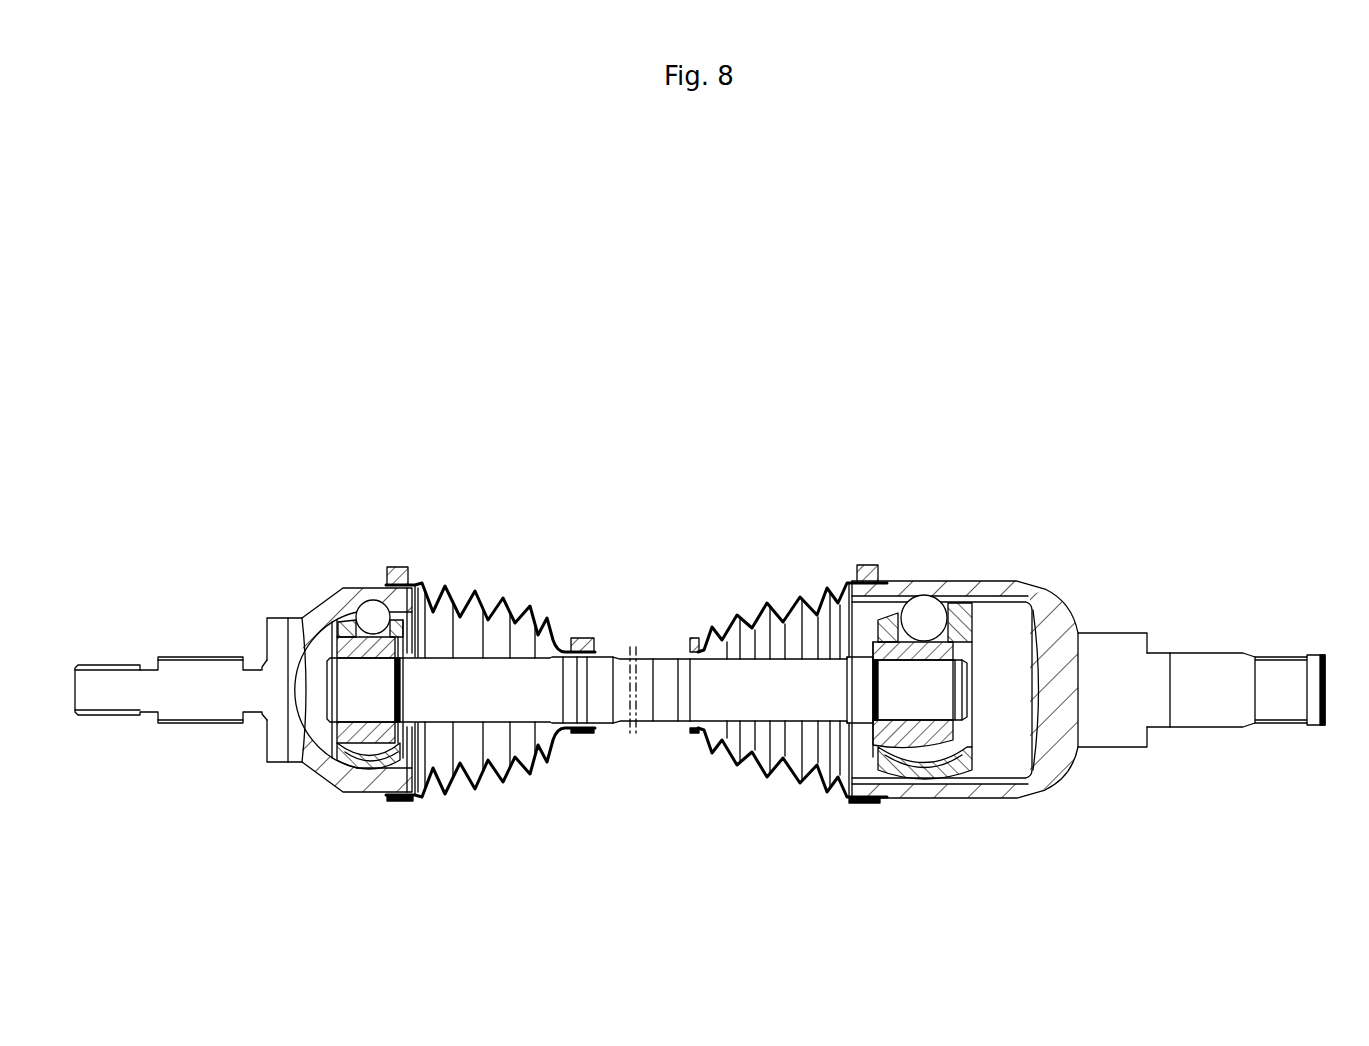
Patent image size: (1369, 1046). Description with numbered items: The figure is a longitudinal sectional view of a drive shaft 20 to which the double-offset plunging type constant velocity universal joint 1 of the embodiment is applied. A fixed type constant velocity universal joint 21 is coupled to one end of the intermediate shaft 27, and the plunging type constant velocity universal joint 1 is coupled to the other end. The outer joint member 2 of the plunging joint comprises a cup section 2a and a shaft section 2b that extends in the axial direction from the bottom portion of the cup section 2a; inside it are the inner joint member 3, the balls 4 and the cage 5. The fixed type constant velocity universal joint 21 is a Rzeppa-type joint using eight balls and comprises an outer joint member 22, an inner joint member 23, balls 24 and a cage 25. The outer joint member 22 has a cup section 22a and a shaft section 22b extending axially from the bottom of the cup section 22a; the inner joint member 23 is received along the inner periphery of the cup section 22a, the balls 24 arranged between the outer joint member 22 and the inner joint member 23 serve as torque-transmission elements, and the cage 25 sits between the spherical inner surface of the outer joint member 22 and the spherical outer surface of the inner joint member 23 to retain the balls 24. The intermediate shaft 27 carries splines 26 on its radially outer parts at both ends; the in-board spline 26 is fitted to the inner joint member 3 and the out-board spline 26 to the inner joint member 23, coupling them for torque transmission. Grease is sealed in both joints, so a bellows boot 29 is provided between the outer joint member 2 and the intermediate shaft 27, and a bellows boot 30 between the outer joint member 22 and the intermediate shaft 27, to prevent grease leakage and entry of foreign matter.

The plunging type constant velocity universal joint 1 is at (955, 535).
The outer joint member 2 is at (995, 578).
The cup section 2a is at (933, 800).
The shaft section 2b is at (1200, 668).
The inner joint member 3 is at (960, 657).
The ball 4 is at (925, 610).
The cage 5 is at (978, 777).
The drive shaft 20 is at (728, 440).
The fixed type constant velocity universal joint 21 is at (356, 512).
The outer joint member 22 is at (334, 592).
The cup section 22a is at (360, 588).
The shaft section 22b is at (196, 675).
The inner joint member 23 is at (338, 640).
The ball 24 is at (374, 610).
The cage 25 is at (345, 773).
The spline 26 is at (366, 755).
The intermediate shaft 27 is at (640, 650).
The bellows boot 29 is at (762, 605).
The bellows boot 30 is at (480, 588).